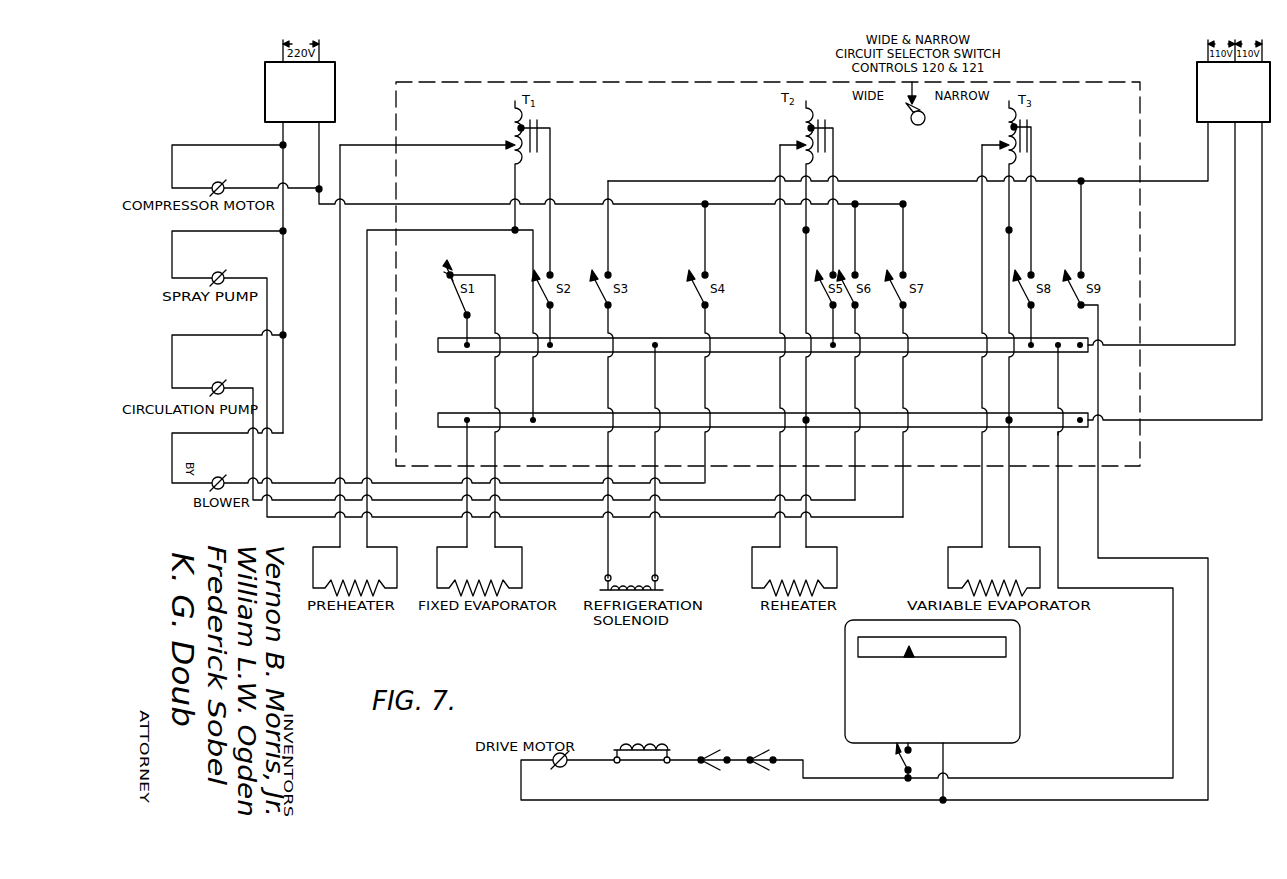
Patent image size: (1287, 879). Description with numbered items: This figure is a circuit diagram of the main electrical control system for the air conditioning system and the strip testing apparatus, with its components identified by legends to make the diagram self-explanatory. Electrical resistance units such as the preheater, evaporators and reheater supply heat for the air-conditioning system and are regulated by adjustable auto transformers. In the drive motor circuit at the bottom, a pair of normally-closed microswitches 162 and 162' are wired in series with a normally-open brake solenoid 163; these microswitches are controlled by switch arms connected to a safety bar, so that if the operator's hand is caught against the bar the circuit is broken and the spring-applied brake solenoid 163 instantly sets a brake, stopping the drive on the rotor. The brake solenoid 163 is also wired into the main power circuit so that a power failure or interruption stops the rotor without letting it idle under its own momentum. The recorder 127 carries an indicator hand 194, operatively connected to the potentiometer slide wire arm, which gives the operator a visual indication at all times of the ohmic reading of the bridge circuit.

The recorder 127 is at (914, 692).
The hand 194 is at (907, 646).
The brake solenoid 163 is at (640, 752).
The microswitch 162' is at (701, 770).
The microswitch 162 is at (767, 753).